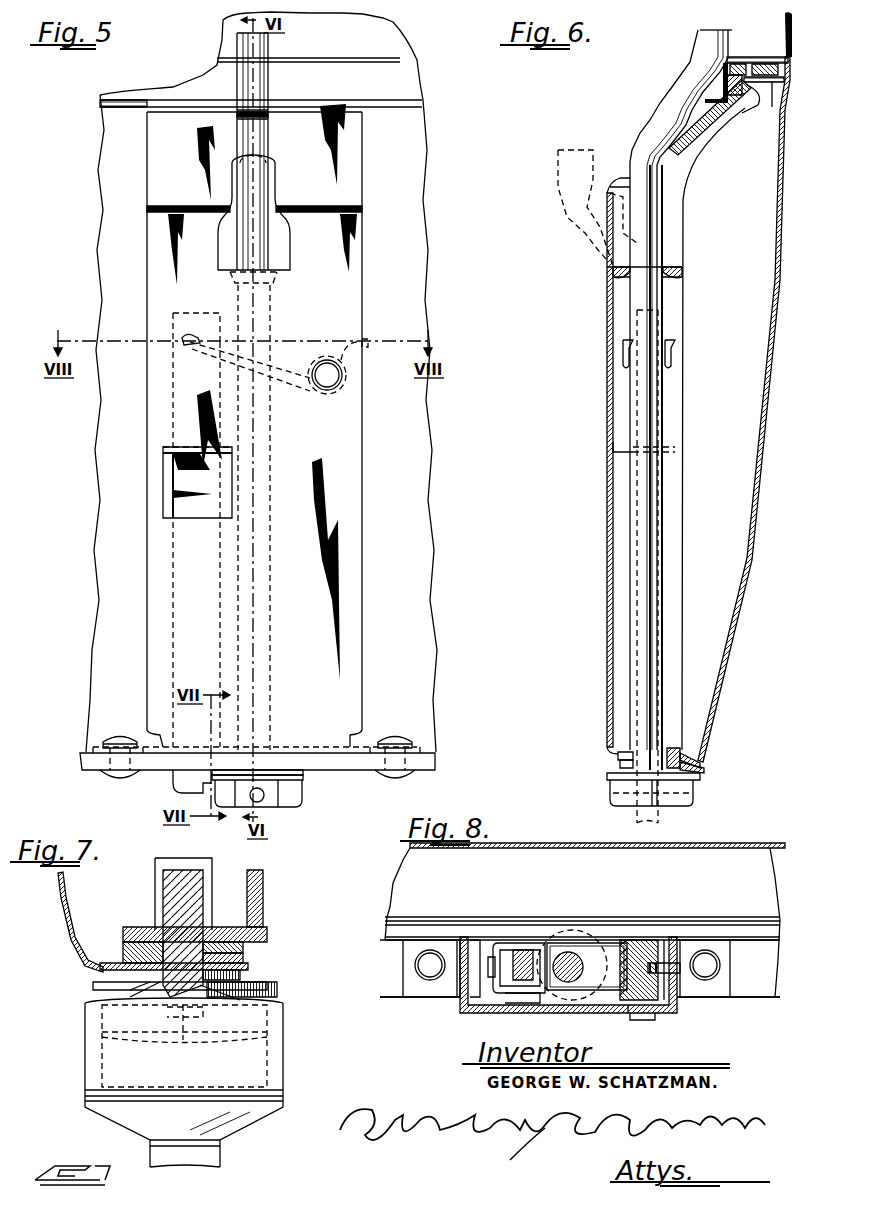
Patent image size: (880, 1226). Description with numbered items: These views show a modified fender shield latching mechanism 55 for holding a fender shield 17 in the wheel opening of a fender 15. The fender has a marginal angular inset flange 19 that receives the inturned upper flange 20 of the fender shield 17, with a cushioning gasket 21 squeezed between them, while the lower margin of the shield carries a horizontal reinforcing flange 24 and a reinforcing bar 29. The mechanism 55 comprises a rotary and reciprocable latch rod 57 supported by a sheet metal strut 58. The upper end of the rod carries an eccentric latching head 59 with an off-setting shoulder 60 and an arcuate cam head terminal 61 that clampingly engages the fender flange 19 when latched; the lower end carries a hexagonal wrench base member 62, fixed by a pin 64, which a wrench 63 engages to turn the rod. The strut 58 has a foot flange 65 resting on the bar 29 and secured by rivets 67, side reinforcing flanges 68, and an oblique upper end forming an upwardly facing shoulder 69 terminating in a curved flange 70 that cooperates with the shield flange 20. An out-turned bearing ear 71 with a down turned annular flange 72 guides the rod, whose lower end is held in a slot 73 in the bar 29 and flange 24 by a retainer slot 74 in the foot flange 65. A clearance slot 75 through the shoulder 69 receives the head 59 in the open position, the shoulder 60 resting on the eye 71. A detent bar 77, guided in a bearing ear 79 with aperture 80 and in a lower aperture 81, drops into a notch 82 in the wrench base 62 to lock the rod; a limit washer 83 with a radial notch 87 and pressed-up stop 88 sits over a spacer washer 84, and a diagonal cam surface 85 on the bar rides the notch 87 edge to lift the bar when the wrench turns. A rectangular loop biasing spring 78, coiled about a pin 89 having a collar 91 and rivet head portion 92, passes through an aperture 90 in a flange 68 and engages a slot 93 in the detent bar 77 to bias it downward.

In FIG. 5, the fender 15 is at (380, 33).
In FIG. 6, the fender 15 is at (785, 25).
In FIG. 5, the fender shield 17 is at (417, 174).
In FIG. 6, the fender shield 17 is at (758, 522).
In FIG. 7, the fender shield 17 is at (65, 913).
In FIG. 8, the fender shield 17 is at (740, 846).
In FIG. 5, the marginal angular inset flange 19 is at (398, 82).
In FIG. 6, the marginal angular inset flange 19 is at (732, 52).
In FIG. 6, the marginal inturned angular flange 20 is at (772, 90).
In FIG. 6, the cushioning gasket 21 is at (755, 63).
In FIG. 6, the horizontal inwardly projecting reinforcing flange 24 is at (706, 763).
In FIG. 7, the horizontal inwardly projecting reinforcing flange 24 is at (107, 962).
In FIG. 6, the reinforcing bar 29 is at (695, 757).
In FIG. 7, the reinforcing bar 29 is at (245, 939).
In FIG. 8, the reinforcing bar 29 is at (755, 990).
In FIG. 5, the fender shield latching mechanism 55 is at (382, 273).
In FIG. 5, the latch rod 57 is at (263, 248).
In FIG. 6, the latch rod 57 is at (644, 230).
In FIG. 7, the latch rod 57 is at (183, 937).
In FIG. 8, the latch rod 57 is at (575, 962).
In FIG. 5, the strut 58 is at (350, 453).
In FIG. 6, the strut 58 is at (607, 410).
In FIG. 7, the strut 58 is at (258, 875).
In FIG. 8, the strut 58 is at (568, 975).
In FIG. 5, the latching head 59 is at (247, 102).
In FIG. 6, the latching head 59 is at (688, 102).
In FIG. 6, the off-setting shoulder 60 is at (681, 143).
In FIG. 6, the arcuate cam head terminal 61 is at (697, 58).
In FIG. 6, the wrench base member 62 is at (694, 789).
In FIG. 7, the wrench base member 62 is at (235, 1045).
In FIG. 7, the wrench 63 is at (283, 1072).
In FIG. 5, the pin 64 is at (262, 796).
In FIG. 6, the foot flange 65 is at (611, 741).
In FIG. 5, the rivets 67 is at (122, 738).
In FIG. 8, the rivets 67 is at (427, 984).
In FIG. 6, the reinforcing flanges 68 is at (696, 405).
In FIG. 8, the reinforcing flanges 68 is at (680, 1000).
In FIG. 5, the upwardly facing shoulder 69 is at (350, 183).
In FIG. 6, the upwardly facing shoulder 69 is at (683, 147).
In FIG. 6, the curved upwardly and inwardly turned flange 70 is at (753, 112).
In FIG. 5, the bearing ear or eye 71 is at (282, 280).
In FIG. 6, the bearing ear or eye 71 is at (684, 270).
In FIG. 6, the down turned annular flange 72 is at (680, 283).
In FIG. 6, the slot 73 is at (620, 762).
In FIG. 6, the retainer slot 74 is at (672, 747).
In FIG. 7, the retainer slot 74 is at (243, 926).
In FIG. 8, the retainer slot 74 is at (735, 975).
In FIG. 5, the clearance slot 75 is at (276, 195).
In FIG. 6, the clearance slot 75 is at (623, 178).
In FIG. 5, the detent bar 77 is at (178, 485).
In FIG. 8, the detent bar 77 is at (524, 950).
In FIG. 5, the biasing spring 78 is at (276, 382).
In FIG. 6, the biasing spring 78 is at (622, 352).
In FIG. 8, the biasing spring 78 is at (574, 933).
In FIG. 5, the bearing ear 79 is at (167, 446).
In FIG. 6, the bearing ear 79 is at (676, 447).
In FIG. 8, the bearing ear 79 is at (487, 940).
In FIG. 8, the bearing aperture 80 is at (481, 940).
In FIG. 7, the bearing aperture 81 is at (243, 955).
In FIG. 7, the notch 82 is at (205, 1020).
In FIG. 5, the limit washer or flange 83 is at (303, 781).
In FIG. 7, the limit washer or flange 83 is at (279, 988).
In FIG. 8, the limit washer or flange 83 is at (585, 1003).
In FIG. 5, the spacer washer 84 is at (282, 772).
In FIG. 7, the spacer washer 84 is at (241, 975).
In FIG. 8, the spacer washer 84 is at (530, 993).
In FIG. 5, the diagonal cam surface 85 is at (202, 798).
In FIG. 7, the diagonal cam surface 85 is at (198, 990).
In FIG. 7, the radial notch 87 is at (285, 1000).
In FIG. 7, the stop 88 is at (155, 970).
In FIG. 8, the pin 89 is at (665, 950).
In FIG. 8, the aperture 90 is at (676, 978).
In FIG. 5, the collar 91 is at (312, 362).
In FIG. 8, the collar 91 is at (633, 1020).
In FIG. 5, the rivet head portion 92 is at (327, 372).
In FIG. 8, the rivet head portion 92 is at (642, 1015).
In FIG. 5, the slot 93 is at (186, 330).
In FIG. 8, the slot 93 is at (488, 975).